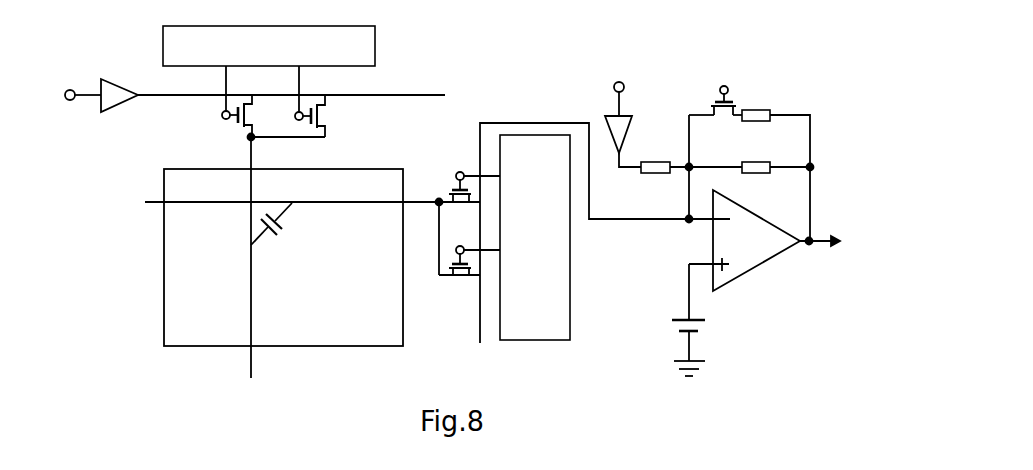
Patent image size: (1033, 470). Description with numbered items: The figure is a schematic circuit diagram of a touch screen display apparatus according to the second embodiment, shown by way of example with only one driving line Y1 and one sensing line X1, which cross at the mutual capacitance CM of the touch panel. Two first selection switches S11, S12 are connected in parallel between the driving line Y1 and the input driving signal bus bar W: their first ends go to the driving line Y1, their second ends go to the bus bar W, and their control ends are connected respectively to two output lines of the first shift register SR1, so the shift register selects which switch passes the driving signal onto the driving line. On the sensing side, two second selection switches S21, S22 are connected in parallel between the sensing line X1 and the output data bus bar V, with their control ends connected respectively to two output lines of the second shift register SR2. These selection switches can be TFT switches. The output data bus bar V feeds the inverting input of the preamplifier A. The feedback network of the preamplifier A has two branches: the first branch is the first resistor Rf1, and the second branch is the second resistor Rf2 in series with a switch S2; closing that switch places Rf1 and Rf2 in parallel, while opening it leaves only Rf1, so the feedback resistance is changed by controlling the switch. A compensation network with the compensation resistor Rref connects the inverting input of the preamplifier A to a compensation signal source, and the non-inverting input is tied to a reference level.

The first shift register SR1 is at (296, 46).
The second shift register SR2 is at (535, 254).
The first selection switch S11 is at (216, 101).
The first selection switch S12 is at (293, 101).
The second selection switch S21 is at (468, 174).
The second selection switch S22 is at (469, 247).
The input driving signal bus bar W is at (304, 106).
The sensing line X1 is at (292, 203).
The driving line Y1 is at (269, 259).
The mutual capacitance CM is at (281, 232).
The output data bus bar V is at (581, 248).
The reset switch S2 is at (724, 89).
The compensation resistor Rref is at (658, 153).
The first resistor Rf1 is at (772, 157).
The second resistor Rf2 is at (767, 103).
The preamplifier A is at (763, 250).